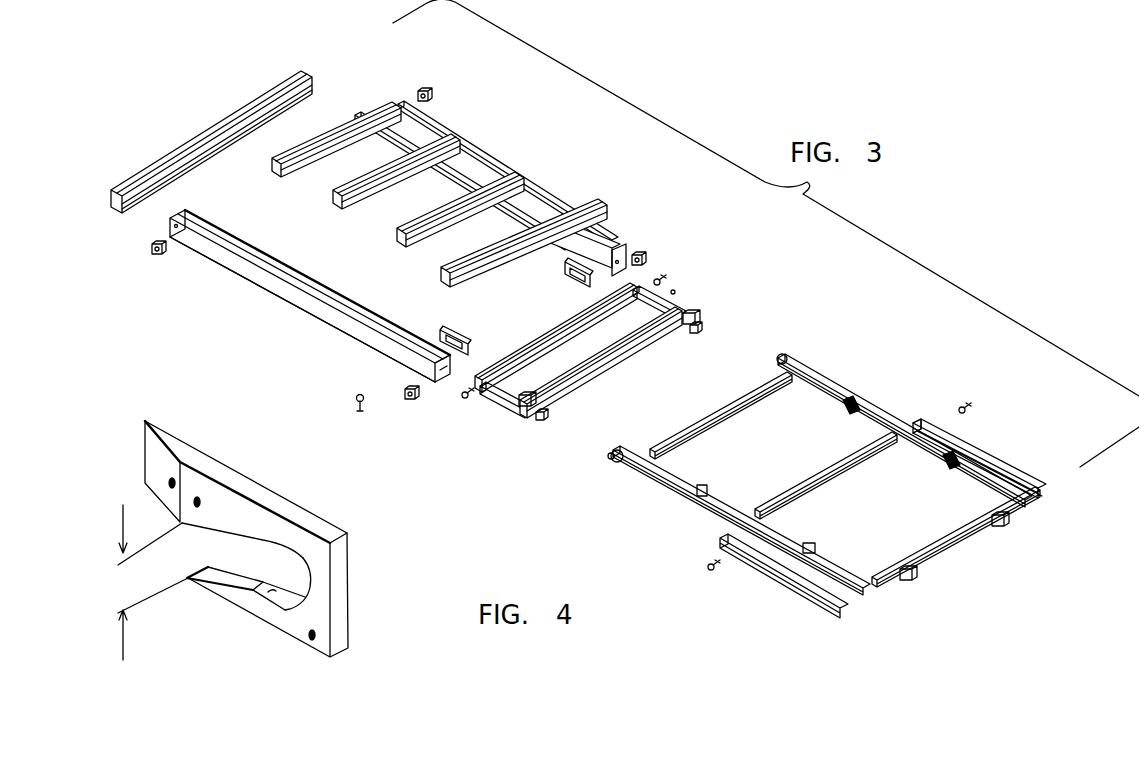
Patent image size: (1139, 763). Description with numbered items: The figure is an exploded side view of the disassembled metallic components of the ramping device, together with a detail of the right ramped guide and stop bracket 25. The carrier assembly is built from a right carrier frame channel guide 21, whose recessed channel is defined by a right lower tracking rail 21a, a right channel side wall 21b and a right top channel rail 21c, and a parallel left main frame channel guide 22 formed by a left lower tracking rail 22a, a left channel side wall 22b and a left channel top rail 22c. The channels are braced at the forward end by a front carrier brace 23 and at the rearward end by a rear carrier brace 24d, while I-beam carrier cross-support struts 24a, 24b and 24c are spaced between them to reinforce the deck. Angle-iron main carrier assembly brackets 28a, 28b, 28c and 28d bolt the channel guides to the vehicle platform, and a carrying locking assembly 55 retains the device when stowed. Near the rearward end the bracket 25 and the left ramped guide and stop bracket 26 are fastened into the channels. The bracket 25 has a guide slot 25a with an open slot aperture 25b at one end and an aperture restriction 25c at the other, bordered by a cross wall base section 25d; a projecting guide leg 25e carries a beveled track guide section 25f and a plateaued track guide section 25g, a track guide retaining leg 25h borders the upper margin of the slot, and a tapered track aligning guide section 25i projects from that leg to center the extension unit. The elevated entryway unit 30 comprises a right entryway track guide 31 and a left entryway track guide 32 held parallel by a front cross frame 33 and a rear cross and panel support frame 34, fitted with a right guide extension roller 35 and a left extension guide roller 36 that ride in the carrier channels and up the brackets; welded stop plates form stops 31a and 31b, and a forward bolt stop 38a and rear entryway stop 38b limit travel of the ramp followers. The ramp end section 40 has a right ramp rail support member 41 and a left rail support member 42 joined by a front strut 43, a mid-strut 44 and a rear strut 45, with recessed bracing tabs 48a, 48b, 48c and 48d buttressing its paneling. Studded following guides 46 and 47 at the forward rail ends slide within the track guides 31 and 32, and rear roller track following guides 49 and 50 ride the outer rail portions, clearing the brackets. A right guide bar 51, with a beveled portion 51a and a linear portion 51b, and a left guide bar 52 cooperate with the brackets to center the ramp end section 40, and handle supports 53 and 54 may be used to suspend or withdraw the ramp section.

In FIG. 3, the right carrier frame channel guide 21 is at (484, 187).
In FIG. 3, the right lower tracking rail 21a is at (608, 270).
In FIG. 3, the right channel side wall 21b is at (637, 247).
In FIG. 3, the right top channel rail 21c is at (615, 232).
In FIG. 3, the left main frame channel guide 22 is at (344, 296).
In FIG. 3, the left lower tracking rail 22a is at (453, 380).
In FIG. 3, the left channel side wall 22b is at (325, 326).
In FIG. 3, the left channel top rail 22c is at (352, 300).
In FIG. 3, the front carrier brace 23 is at (223, 118).
In FIG. 3, the carrier cross-support strut 24a is at (357, 120).
In FIG. 3, the carrier cross-support strut 24b is at (367, 178).
In FIG. 3, the carrier cross-support strut 24c is at (427, 220).
In FIG. 3, the rear carrier brace 24d is at (463, 258).
In FIG. 3, the right ramped guide and stop bracket 25 is at (565, 278).
In FIG. 4, the right ramped guide and stop bracket 25 is at (268, 536).
In FIG. 4, the guide slot 25a is at (243, 553).
In FIG. 4, the open slot aperture 25b is at (150, 582).
In FIG. 4, the aperture restriction 25c is at (287, 572).
In FIG. 4, the cross wall base section 25d is at (362, 552).
In FIG. 4, the projecting guide leg 25e is at (232, 600).
In FIG. 4, the beveled track guide section 25f is at (210, 568).
In FIG. 4, the plateaued track guide section 25g is at (270, 597).
In FIG. 4, the track guide retaining leg 25h is at (198, 456).
In FIG. 4, the track aligning guide section 25i is at (140, 458).
In FIG. 3, the left ramped guide and stop bracket 26 is at (452, 330).
In FIG. 3, the main carrier assembly bracket 28a is at (432, 93).
In FIG. 3, the main carrier assembly bracket 28b is at (648, 258).
In FIG. 3, the main carrier assembly bracket 28c is at (412, 400).
In FIG. 3, the main carrier assembly bracket 28d is at (155, 252).
In FIG. 3, the elevated entryway unit 30 is at (595, 375).
In FIG. 3, the right entryway track guide 31 is at (700, 312).
In FIG. 3, the stop 31a is at (680, 295).
In FIG. 3, the end block 31b is at (518, 403).
In FIG. 3, the left entryway track guide 32 is at (508, 416).
In FIG. 3, the front cross frame 33 is at (563, 323).
In FIG. 3, the rear cross and panel support frame 34 is at (633, 330).
In FIG. 3, the right guide extension roller 35 is at (665, 283).
In FIG. 3, the left extension guide roller 36 is at (460, 396).
In FIG. 3, the forward bolt stop 38a is at (702, 330).
In FIG. 3, the rear entryway stop 38b is at (548, 414).
In FIG. 3, the ramp end section 40 is at (798, 458).
In FIG. 3, the right ramp rail support member 41 is at (832, 382).
In FIG. 3, the left rail support member 42 is at (695, 492).
In FIG. 3, the front strut 43 is at (742, 400).
In FIG. 3, the mid-strut 44 is at (835, 476).
In FIG. 3, the rear strut 45 is at (972, 548).
In FIG. 3, the left ramp end studded following guide 46 is at (609, 460).
In FIG. 3, the right ramp end studded following guide 47 is at (789, 356).
In FIG. 3, the recessed bracing tab 48a is at (848, 406).
In FIG. 3, the recessed bracing tab 48b is at (950, 460).
In FIG. 3, the recessed bracing tab 48c is at (703, 487).
In FIG. 3, the recessed bracing tab 48d is at (813, 545).
In FIG. 3, the rear track following guide 49 is at (966, 410).
In FIG. 3, the rear track following guide 50 is at (710, 568).
In FIG. 3, the right guide bar 51 is at (973, 440).
In FIG. 3, the beveled portion 51a is at (924, 420).
In FIG. 3, the linear portion 51b is at (985, 432).
In FIG. 3, the left guide bar 52 is at (812, 605).
In FIG. 3, the handle support 53 is at (1005, 522).
In FIG. 3, the handle support 54 is at (910, 580).
In FIG. 3, the carrying locking assembly 55 is at (355, 403).